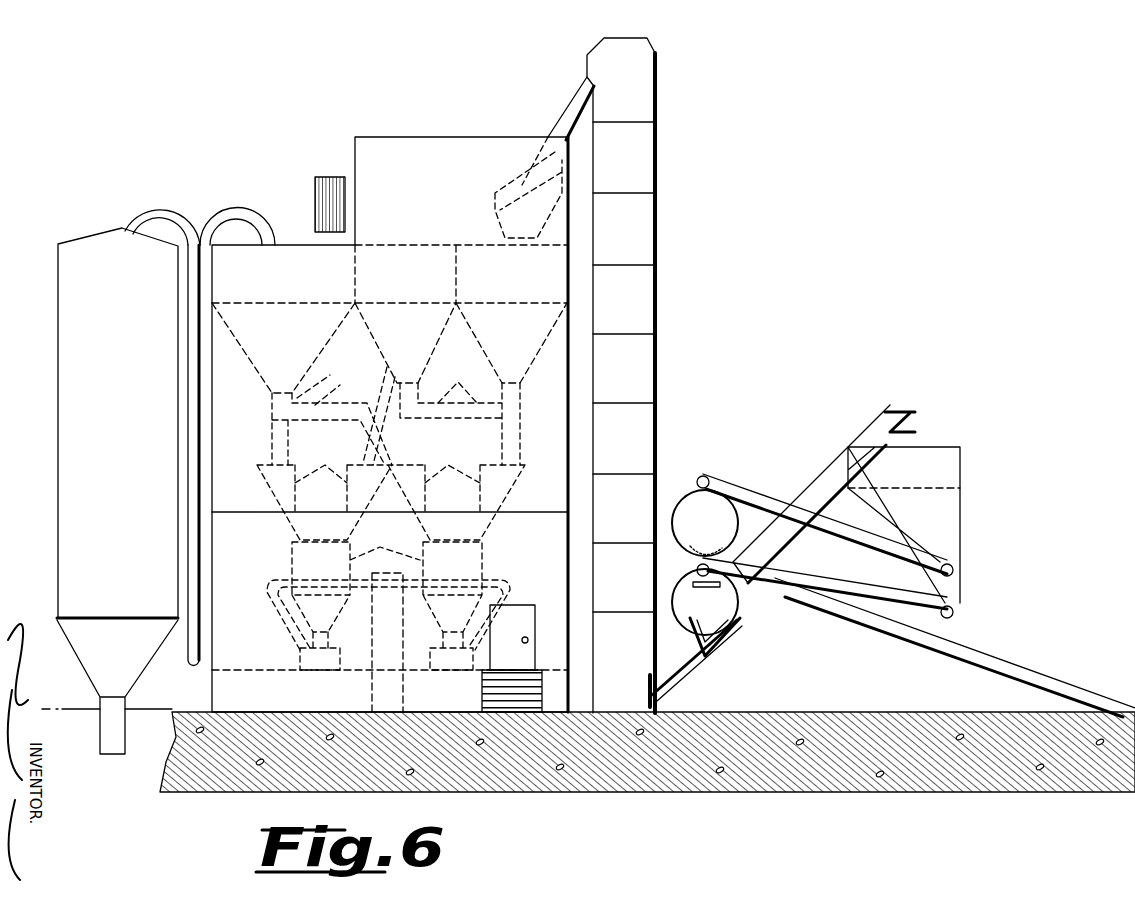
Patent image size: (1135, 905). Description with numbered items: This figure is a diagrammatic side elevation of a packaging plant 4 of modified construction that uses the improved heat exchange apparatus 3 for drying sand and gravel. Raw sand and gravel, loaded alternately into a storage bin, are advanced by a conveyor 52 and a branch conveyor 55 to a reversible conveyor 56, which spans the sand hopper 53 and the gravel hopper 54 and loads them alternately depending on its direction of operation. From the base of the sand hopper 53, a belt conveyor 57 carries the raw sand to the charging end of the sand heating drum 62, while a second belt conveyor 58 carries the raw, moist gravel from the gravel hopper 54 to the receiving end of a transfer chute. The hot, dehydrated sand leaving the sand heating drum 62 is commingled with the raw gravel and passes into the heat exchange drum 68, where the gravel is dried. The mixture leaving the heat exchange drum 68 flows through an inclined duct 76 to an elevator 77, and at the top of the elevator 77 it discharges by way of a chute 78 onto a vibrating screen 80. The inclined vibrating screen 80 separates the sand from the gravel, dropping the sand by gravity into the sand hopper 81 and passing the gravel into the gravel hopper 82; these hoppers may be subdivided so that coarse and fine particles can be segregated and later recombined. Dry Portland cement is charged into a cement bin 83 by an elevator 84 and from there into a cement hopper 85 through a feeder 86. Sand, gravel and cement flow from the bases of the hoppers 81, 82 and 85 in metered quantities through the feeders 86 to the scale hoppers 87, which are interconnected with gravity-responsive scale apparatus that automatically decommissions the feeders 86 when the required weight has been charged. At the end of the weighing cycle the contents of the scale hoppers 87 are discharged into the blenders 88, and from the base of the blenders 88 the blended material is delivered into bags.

The heat exchange apparatus 3 is at (688, 494).
The packaging plant 4 is at (410, 136).
The conveyor 52 is at (983, 658).
The sand hopper 53 is at (872, 505).
The gravel hopper 54 is at (945, 513).
The branch conveyor 55 is at (803, 466).
The reversible conveyor 56 is at (908, 424).
The belt conveyor 57 is at (708, 478).
The belt conveyor 58 is at (843, 590).
The sand heating drum 62 is at (686, 519).
The heat exchange drum 68 is at (713, 612).
The inclined duct 76 is at (676, 676).
The elevator 77 is at (640, 313).
The chute 78 is at (572, 104).
The vibrating screen 80 is at (518, 186).
The sand hopper 81 is at (511, 328).
The gravel hopper 82 is at (405, 324).
The cement bin 83 is at (76, 276).
The elevator 84 is at (192, 366).
The cement hopper 85 is at (283, 329).
The feeders 86 is at (396, 412).
The scale hoppers 87 is at (391, 493).
The blenders 88 is at (388, 598).